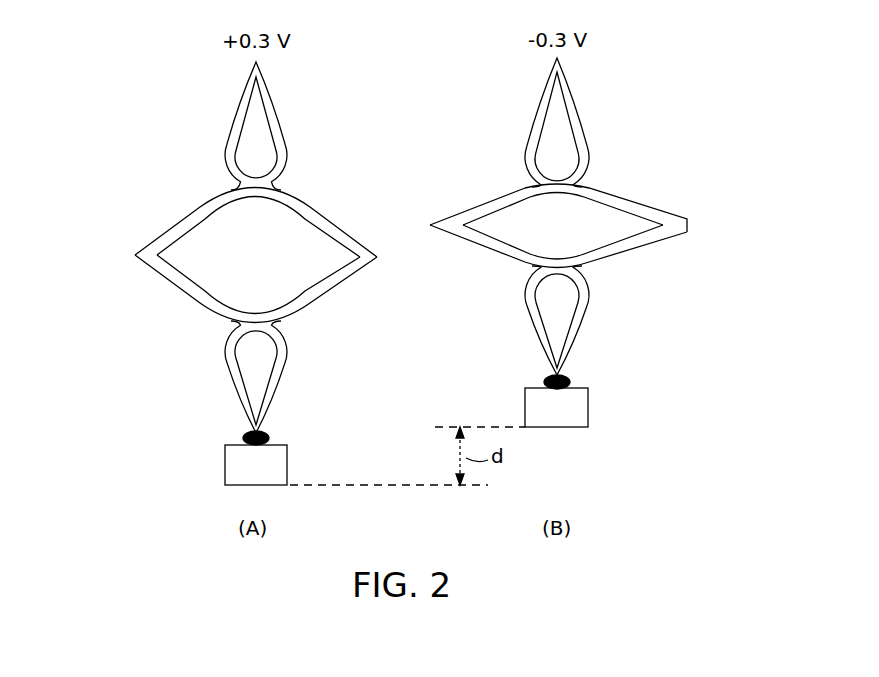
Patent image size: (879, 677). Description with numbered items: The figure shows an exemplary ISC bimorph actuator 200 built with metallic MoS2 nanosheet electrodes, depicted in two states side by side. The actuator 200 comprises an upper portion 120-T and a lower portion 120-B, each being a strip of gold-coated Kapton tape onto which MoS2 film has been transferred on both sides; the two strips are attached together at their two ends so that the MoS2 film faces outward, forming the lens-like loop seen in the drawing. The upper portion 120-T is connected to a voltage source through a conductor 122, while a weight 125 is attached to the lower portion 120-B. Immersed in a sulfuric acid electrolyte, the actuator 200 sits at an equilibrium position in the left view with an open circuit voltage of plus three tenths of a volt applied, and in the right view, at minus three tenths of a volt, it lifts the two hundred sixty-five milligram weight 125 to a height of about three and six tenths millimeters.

The ISC actuator 200 is at (382, 263).
The conductor 122 is at (297, 55).
The upper portion 120-T is at (330, 223).
The lower portion 120-B is at (330, 283).
The weight 125 is at (290, 325).